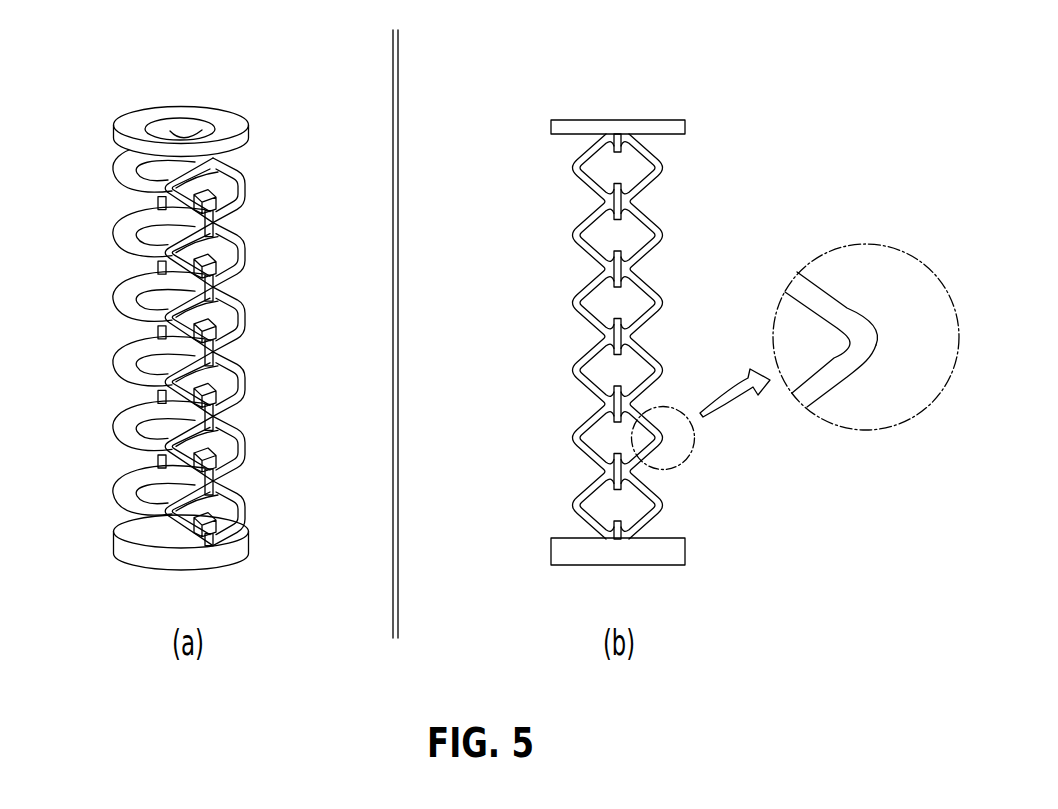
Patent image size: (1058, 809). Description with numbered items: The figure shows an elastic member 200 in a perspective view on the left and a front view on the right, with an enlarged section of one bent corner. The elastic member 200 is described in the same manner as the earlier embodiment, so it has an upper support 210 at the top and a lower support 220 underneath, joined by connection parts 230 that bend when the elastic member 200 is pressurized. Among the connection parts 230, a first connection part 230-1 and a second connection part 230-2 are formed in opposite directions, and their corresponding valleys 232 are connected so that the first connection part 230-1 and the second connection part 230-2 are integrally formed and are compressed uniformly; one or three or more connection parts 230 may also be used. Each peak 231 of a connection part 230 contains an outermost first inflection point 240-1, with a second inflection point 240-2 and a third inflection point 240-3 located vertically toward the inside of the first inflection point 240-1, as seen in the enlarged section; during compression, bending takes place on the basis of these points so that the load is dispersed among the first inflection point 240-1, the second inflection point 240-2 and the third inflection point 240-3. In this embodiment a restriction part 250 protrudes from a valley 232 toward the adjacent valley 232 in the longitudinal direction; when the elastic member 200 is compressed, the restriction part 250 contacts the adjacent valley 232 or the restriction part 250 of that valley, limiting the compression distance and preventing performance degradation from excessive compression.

The elastic member 200 is at (228, 99).
The upper plate 210 is at (248, 135).
The lower plate 220 is at (256, 549).
The connection part 230 is at (283, 537).
The first connection part 230-1 is at (538, 325).
The second connection part 230-2 is at (690, 264).
The peak 231 is at (570, 164).
The valley 232 is at (600, 204).
The first inflection point 240-1 is at (848, 340).
The second inflection point 240-2 is at (847, 305).
The third inflection point 240-3 is at (847, 381).
The restriction part 250 is at (152, 275).